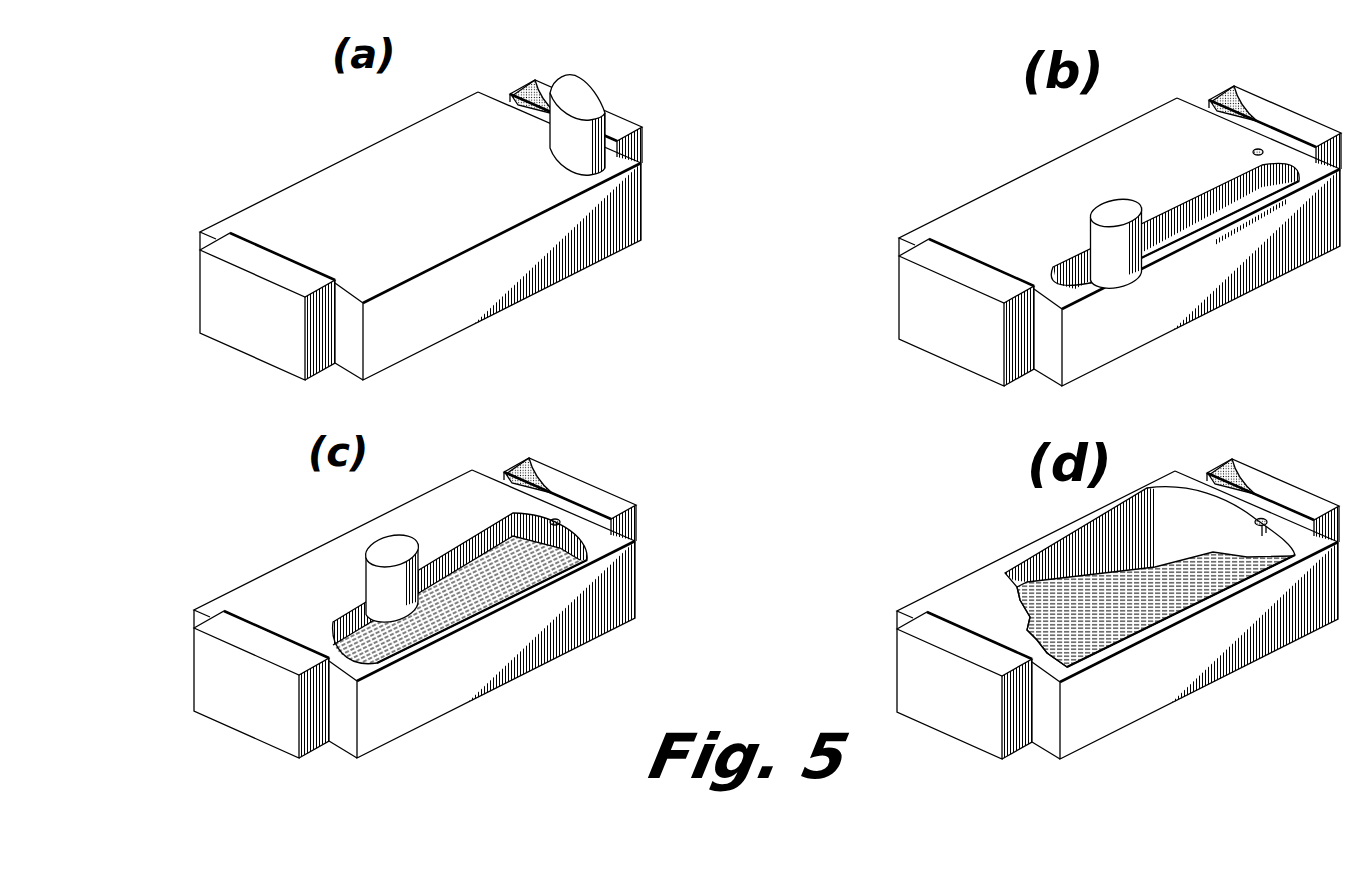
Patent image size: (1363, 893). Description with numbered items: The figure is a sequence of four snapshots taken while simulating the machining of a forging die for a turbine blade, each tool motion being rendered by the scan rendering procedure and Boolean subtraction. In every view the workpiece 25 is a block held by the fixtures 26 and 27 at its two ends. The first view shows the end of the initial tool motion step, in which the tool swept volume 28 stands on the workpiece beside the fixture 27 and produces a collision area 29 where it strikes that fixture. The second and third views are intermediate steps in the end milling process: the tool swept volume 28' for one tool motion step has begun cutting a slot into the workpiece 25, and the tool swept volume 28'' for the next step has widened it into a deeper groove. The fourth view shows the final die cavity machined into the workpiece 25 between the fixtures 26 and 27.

The workpiece 25 is at (340, 170).
The fixture 26 is at (270, 348).
The fixture 27 is at (623, 127).
The tool swept volume 28 is at (604, 100).
The tool swept volume 28' is at (1132, 213).
The tool swept volume 28'' is at (399, 530).
The collision area 29 is at (530, 93).